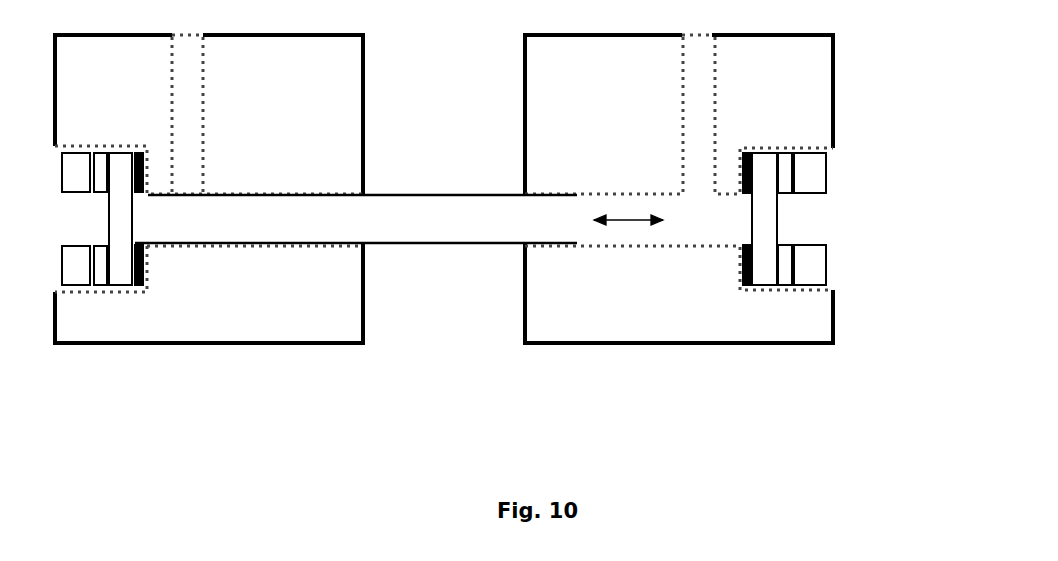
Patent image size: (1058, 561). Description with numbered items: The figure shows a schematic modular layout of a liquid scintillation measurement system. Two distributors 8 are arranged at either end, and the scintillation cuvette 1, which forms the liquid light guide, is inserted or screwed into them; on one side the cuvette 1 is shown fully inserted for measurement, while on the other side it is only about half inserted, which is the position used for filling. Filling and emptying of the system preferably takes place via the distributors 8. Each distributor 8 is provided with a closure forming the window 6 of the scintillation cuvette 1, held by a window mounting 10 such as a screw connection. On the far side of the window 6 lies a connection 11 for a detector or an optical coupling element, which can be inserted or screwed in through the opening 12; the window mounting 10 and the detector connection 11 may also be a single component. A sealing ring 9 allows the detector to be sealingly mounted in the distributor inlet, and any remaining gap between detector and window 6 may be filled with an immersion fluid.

The scintillation cuvette 1 is at (450, 245).
The window 6 is at (765, 268).
The distributor 8 is at (660, 286).
The sealing ring 9 is at (749, 287).
The window mounting 10 is at (782, 283).
The connection for a detector 11 is at (826, 267).
The opening 12 is at (825, 219).